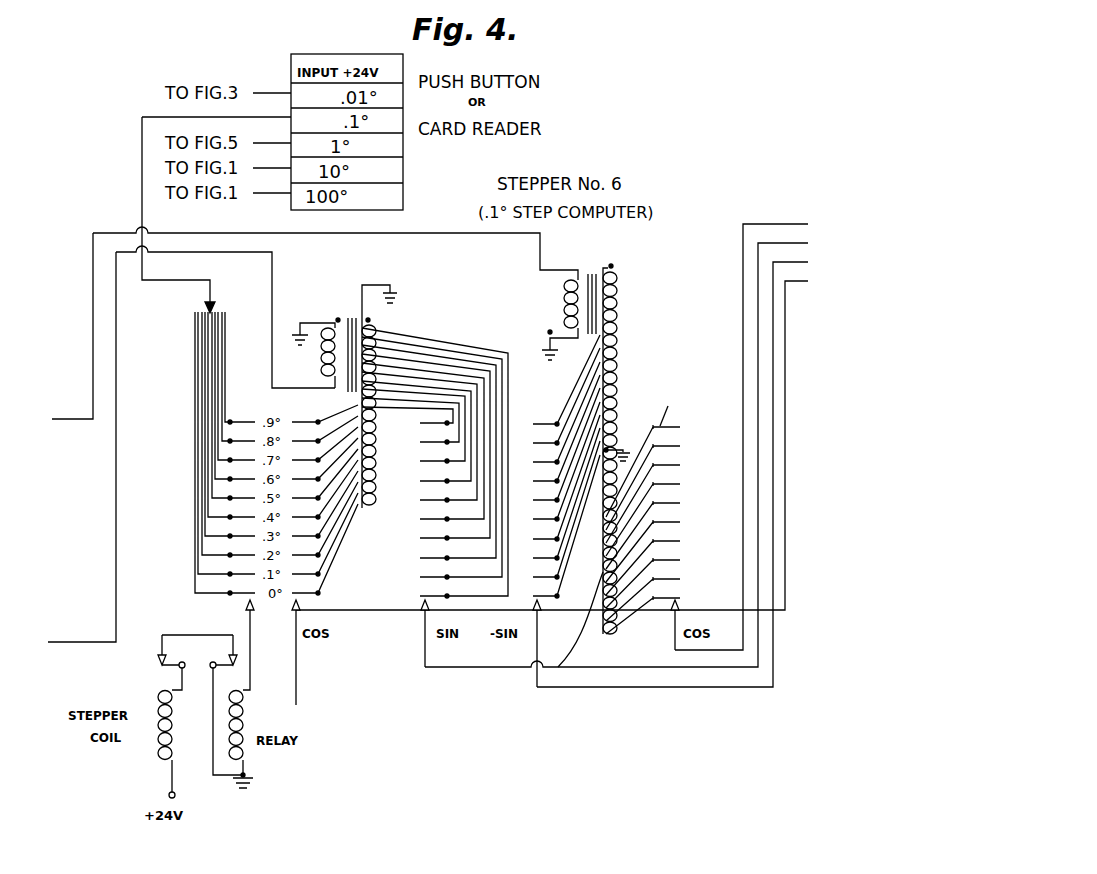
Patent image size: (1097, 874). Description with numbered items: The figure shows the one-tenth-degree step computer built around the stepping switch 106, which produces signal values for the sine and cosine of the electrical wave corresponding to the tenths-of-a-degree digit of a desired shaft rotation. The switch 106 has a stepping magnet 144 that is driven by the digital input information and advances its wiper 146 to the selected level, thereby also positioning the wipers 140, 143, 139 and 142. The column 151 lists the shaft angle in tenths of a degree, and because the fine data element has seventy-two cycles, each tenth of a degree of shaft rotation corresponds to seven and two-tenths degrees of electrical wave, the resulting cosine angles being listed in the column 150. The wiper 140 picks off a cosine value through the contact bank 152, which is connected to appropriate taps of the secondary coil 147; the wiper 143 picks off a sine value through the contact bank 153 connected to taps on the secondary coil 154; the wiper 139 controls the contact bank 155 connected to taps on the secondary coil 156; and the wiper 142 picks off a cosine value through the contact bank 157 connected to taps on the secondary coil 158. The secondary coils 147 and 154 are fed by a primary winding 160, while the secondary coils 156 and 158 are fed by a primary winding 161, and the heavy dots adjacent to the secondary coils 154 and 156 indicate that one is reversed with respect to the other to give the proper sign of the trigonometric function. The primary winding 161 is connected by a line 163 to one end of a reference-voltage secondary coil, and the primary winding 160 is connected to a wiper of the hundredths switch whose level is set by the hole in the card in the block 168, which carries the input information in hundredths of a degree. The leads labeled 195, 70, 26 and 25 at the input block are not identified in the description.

The block 168 is at (403, 94).
The 0.1 degree input lead 195 is at (403, 130).
The 1 degree input lead 70 is at (403, 155).
The 10 degree input lead 26 is at (403, 178).
The 100 degree input lead 25 is at (403, 205).
The line 163 is at (93, 343).
The column 151 is at (277, 402).
The contact bank 152 is at (310, 406).
The contact bank 153 is at (420, 425).
The secondary coil 154 is at (350, 318).
The primary winding 160 is at (328, 362).
The secondary coil 147 is at (365, 500).
The wiper 146 is at (246, 604).
The wiper 140 is at (300, 606).
The wiper 143 is at (420, 604).
The wiper 139 is at (541, 605).
The wiper 142 is at (672, 606).
The contact bank 155 is at (540, 424).
The primary winding 161 is at (568, 300).
The secondary coil 156 is at (612, 305).
The switch 106 is at (664, 430).
The column 150 is at (703, 420).
The contact bank 157 is at (660, 408).
The secondary coil 158 is at (561, 670).
The stepping magnet 144 is at (165, 755).